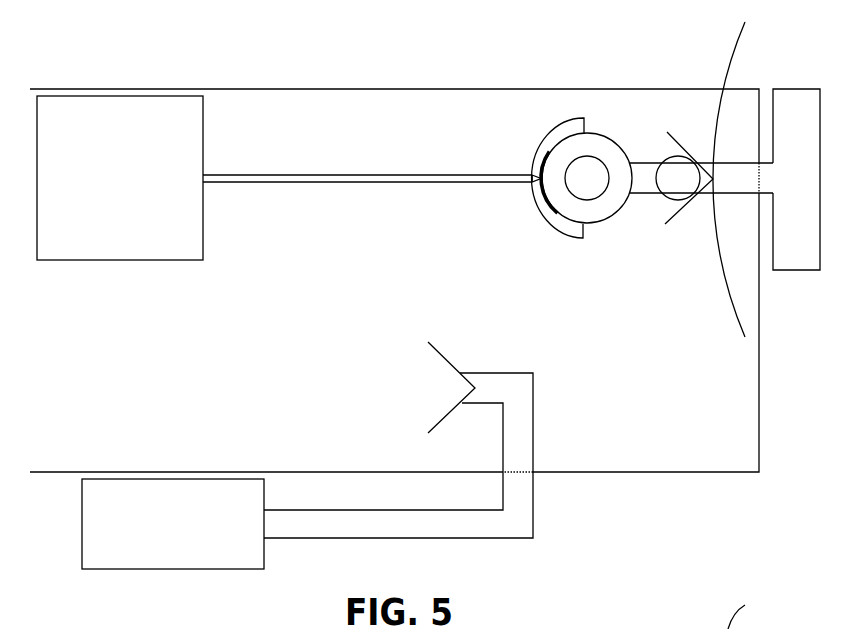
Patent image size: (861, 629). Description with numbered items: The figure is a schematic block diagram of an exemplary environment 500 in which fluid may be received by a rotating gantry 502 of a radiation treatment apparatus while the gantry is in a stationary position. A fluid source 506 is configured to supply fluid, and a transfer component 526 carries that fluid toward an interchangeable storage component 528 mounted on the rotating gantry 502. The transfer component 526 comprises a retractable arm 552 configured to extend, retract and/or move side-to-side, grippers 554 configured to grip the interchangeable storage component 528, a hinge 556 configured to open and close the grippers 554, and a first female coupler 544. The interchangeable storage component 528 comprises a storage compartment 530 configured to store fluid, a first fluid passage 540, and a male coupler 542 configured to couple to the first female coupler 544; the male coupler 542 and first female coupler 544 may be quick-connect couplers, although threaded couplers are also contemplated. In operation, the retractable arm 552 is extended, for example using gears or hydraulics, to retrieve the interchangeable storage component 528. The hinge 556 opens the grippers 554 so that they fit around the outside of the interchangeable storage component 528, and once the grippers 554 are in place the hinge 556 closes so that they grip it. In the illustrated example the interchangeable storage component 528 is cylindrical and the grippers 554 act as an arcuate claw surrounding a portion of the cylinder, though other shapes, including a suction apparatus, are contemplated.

The environment 500 is at (142, 45).
The rotating gantry 502 is at (731, 58).
The fluid source 506 is at (173, 479).
The transfer component 526 is at (362, 89).
The interchangeable storage component 528 is at (610, 133).
The storage compartment 530 is at (568, 198).
The first fluid passage 540 is at (647, 163).
The male coupler 542 is at (672, 199).
The first female coupler 544 is at (692, 200).
The retractable arm 552 is at (206, 184).
The grippers 554 is at (549, 133).
The hinge 556 is at (532, 182).